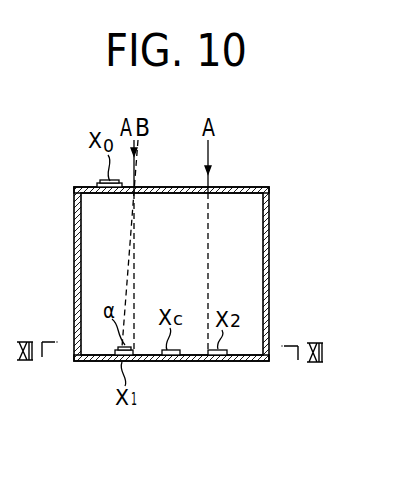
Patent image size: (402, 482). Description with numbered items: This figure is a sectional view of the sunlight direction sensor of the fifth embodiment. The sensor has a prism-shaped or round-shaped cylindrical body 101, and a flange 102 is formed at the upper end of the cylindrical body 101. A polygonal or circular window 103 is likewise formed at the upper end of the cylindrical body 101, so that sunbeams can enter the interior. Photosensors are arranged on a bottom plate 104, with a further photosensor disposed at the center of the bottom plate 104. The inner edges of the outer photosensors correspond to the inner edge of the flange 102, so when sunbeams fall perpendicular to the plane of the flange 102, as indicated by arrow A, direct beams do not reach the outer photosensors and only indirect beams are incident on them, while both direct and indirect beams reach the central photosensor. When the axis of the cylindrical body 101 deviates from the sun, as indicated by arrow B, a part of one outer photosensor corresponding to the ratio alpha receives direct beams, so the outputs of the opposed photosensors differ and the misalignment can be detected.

The cylindrical body 101 is at (269, 218).
The flange 102 is at (87, 188).
The window 103 is at (171, 195).
The bottom plate 104 is at (197, 362).